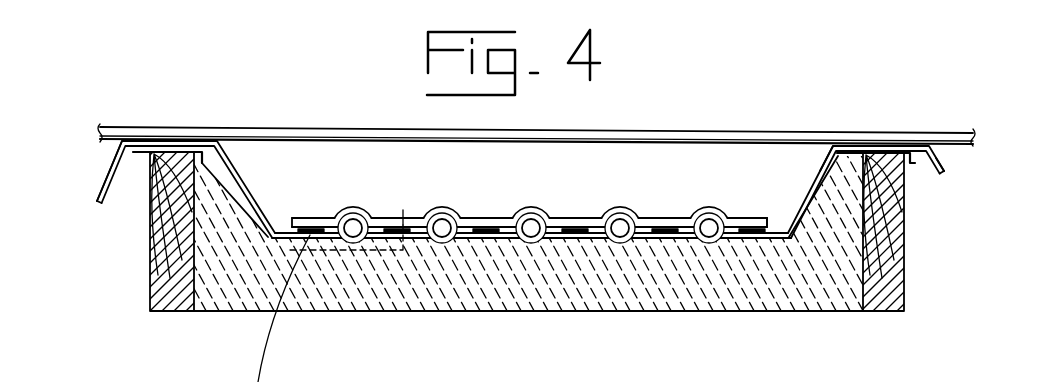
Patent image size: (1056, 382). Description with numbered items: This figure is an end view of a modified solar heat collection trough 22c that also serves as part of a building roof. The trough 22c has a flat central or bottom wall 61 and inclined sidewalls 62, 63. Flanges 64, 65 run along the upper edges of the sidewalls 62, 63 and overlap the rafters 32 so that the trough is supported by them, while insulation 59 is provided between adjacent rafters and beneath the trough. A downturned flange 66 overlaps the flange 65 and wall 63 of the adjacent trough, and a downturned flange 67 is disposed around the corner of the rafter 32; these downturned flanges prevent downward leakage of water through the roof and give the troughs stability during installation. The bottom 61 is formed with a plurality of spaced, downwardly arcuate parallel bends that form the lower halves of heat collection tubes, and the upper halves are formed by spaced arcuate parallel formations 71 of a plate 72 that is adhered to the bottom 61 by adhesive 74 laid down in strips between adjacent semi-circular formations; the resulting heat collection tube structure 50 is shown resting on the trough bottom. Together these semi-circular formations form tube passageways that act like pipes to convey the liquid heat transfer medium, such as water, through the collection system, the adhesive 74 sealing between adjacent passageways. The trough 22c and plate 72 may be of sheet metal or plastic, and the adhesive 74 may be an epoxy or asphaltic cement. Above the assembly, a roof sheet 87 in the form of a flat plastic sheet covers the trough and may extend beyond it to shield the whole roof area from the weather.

The trough 22c is at (250, 170).
The rafter 32 is at (150, 262).
The circuit board 50 is at (360, 206).
The insulation 59 is at (563, 303).
The bottom wall 61 is at (776, 234).
The inclined sidewall 62 is at (243, 231).
The inclined sidewall 63 is at (90, 197).
The flange 64 is at (160, 140).
The flange 65 is at (181, 144).
The downturned flange 66 is at (108, 157).
The downturned flange / arcuate bend 67 is at (203, 152).
The arcuate parallel formation 71 is at (349, 207).
The plate 72 is at (499, 222).
The adhesive 74 is at (485, 229).
The roof sheet 87 is at (733, 133).